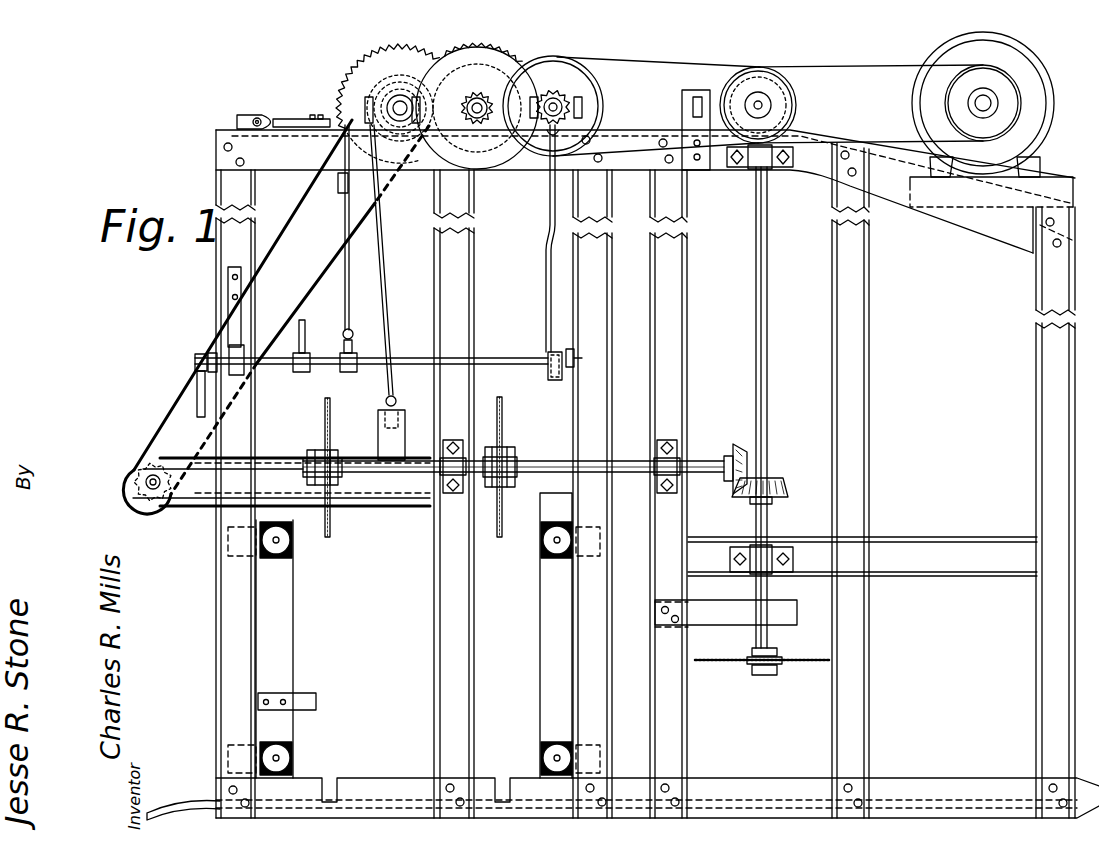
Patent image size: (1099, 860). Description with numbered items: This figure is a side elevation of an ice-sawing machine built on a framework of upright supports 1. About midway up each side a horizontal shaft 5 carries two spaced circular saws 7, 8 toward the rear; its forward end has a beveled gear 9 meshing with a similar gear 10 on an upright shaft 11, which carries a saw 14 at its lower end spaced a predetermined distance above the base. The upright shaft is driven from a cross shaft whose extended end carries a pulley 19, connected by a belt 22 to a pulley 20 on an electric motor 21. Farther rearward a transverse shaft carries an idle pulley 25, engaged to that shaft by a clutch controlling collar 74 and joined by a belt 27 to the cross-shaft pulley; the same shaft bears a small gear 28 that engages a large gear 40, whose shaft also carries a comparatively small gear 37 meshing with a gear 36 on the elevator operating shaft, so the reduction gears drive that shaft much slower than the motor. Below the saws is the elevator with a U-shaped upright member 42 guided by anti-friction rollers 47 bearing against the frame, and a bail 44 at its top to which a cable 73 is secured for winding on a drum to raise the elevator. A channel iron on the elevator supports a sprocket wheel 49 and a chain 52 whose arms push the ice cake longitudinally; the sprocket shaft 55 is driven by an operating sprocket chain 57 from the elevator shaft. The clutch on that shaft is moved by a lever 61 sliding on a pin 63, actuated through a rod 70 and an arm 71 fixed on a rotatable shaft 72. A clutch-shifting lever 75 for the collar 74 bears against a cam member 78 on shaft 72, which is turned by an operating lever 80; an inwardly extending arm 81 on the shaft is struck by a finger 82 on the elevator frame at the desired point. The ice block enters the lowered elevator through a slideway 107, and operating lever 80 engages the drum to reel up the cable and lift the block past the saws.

The upright supports 1 is at (872, 364).
The horizontal shafts 5 is at (555, 460).
The circular saw 7 is at (324, 419).
The circular saw 8 is at (504, 418).
The beveled gear 9 is at (742, 446).
The bevel gear 10 is at (787, 487).
The upright shaft 11 is at (770, 428).
The saw 14 is at (800, 666).
The second pulley 19 is at (796, 94).
The motor pulley 20 is at (1010, 84).
The electric motor 21 is at (930, 97).
The belt 22 is at (870, 93).
The pulley 25 is at (563, 60).
The belt 27 is at (656, 98).
The small gear 28 is at (554, 90).
The gear 36 is at (356, 77).
The small gear 37 is at (478, 92).
The large gear 40 is at (508, 64).
The upright member 42 is at (294, 608).
The bail 44 is at (405, 424).
The anti-friction rollers 47 is at (292, 542).
The sprocket wheel 49 is at (152, 506).
The chain 52 is at (378, 507).
The shaft 55 is at (145, 480).
The operating sprocket chain 57 is at (282, 222).
The lever 61 is at (306, 118).
The pin 63 is at (259, 116).
The rod 70 is at (346, 290).
The arm 71 is at (356, 338).
The rotatable shaft 72 is at (366, 372).
The cable 73 is at (389, 302).
The clutch controlling collar 74 is at (575, 96).
The clutch-shifting lever 75 is at (548, 262).
The cam member 78 is at (545, 372).
The operating lever 80 is at (198, 385).
The inwardly extending arm 81 is at (305, 333).
The finger 82 is at (310, 694).
The slideway 107 is at (186, 801).